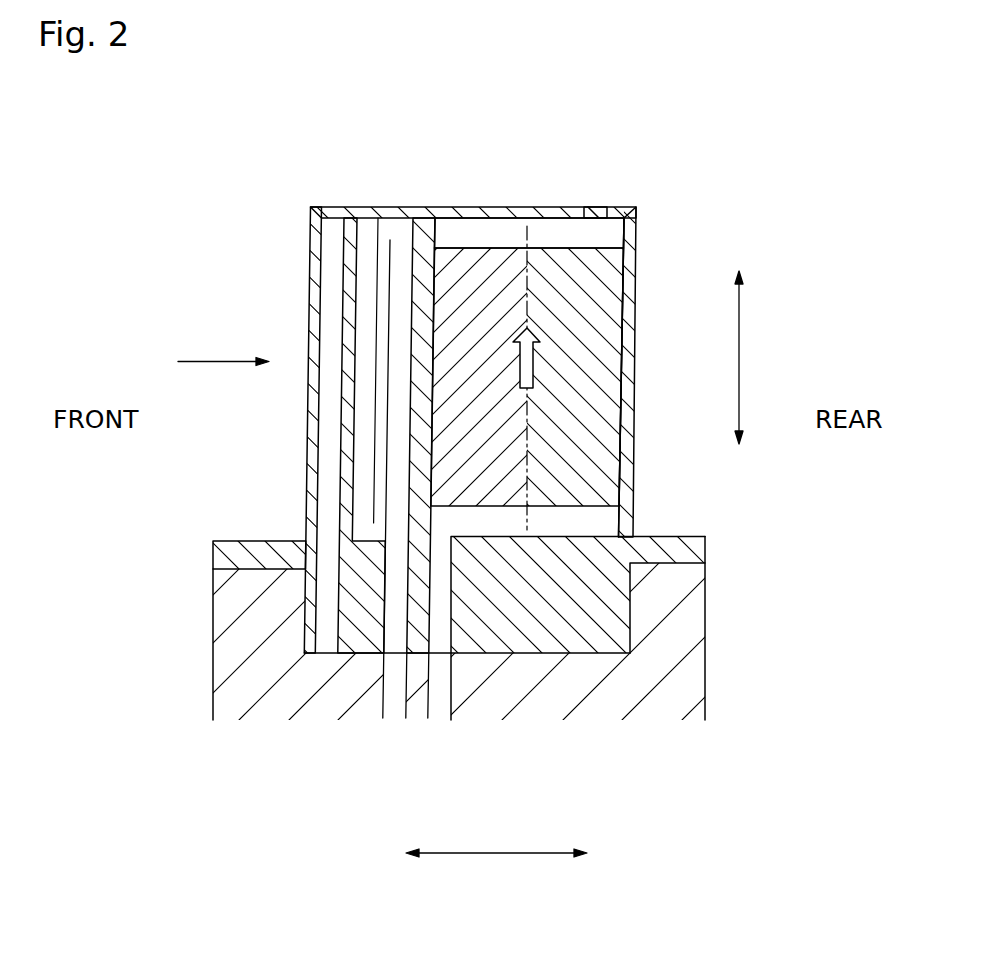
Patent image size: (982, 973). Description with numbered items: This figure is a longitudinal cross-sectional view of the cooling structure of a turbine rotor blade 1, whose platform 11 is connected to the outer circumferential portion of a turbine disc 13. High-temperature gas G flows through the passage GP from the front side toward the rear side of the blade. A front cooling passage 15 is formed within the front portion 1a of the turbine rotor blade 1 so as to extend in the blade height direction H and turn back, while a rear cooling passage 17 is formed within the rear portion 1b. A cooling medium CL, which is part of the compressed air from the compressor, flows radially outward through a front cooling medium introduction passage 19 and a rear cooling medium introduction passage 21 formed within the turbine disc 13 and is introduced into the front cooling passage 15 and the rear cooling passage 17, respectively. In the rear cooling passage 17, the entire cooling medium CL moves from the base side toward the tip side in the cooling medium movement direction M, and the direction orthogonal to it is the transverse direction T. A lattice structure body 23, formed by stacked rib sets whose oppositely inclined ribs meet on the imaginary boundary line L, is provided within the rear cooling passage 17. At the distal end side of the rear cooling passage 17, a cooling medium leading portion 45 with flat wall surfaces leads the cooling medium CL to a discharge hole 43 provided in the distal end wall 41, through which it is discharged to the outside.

The turbine rotor blade 1 is at (466, 389).
The front portion 1a is at (311, 239).
The rear portion 1b is at (636, 207).
The platform 11 is at (243, 555).
The turbine disc 13 is at (683, 657).
The front cooling passage 15 is at (400, 235).
The rear cooling passage 17 is at (447, 232).
The front cooling medium introduction passage 19 is at (385, 680).
The rear cooling medium introduction passage 21 is at (447, 693).
The lattice structure body 23 is at (510, 258).
The distal end wall 41 is at (474, 171).
The discharge hole 43 is at (597, 210).
The cooling medium leading portion 45 is at (550, 237).
The high-temperature gas G is at (217, 360).
The passage GP is at (242, 436).
The cooling medium movement direction M is at (533, 355).
The imaginary boundary line L is at (527, 430).
The blade height direction H is at (741, 360).
The transverse direction T is at (508, 856).
The cooling medium CL is at (437, 566).